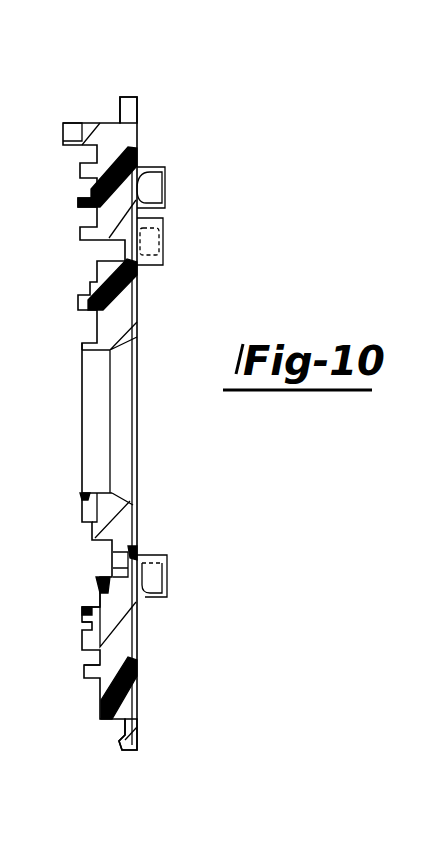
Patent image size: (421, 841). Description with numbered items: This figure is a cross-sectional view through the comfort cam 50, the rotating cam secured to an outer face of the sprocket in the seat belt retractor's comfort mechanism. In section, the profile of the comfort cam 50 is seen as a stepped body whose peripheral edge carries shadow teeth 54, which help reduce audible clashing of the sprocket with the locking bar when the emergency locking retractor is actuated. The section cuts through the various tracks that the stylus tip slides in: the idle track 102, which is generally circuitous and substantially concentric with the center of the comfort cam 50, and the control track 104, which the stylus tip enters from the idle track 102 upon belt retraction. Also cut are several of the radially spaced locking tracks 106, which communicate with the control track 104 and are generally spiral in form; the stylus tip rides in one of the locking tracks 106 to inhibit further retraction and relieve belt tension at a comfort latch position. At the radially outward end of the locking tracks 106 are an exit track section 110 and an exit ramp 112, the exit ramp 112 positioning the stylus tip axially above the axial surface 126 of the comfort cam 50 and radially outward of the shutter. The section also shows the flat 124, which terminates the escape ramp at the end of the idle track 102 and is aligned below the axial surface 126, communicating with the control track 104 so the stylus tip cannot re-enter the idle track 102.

The comfort cam 50 is at (170, 305).
The shadow teeth 54 is at (120, 115).
The idle track 102 is at (96, 323).
The control track 104 is at (110, 568).
The locking tracks 106 is at (100, 588).
The exit track section 110 is at (97, 690).
The exit ramp 112 is at (63, 137).
The flat 124 is at (92, 541).
The axial surface 126 is at (82, 497).